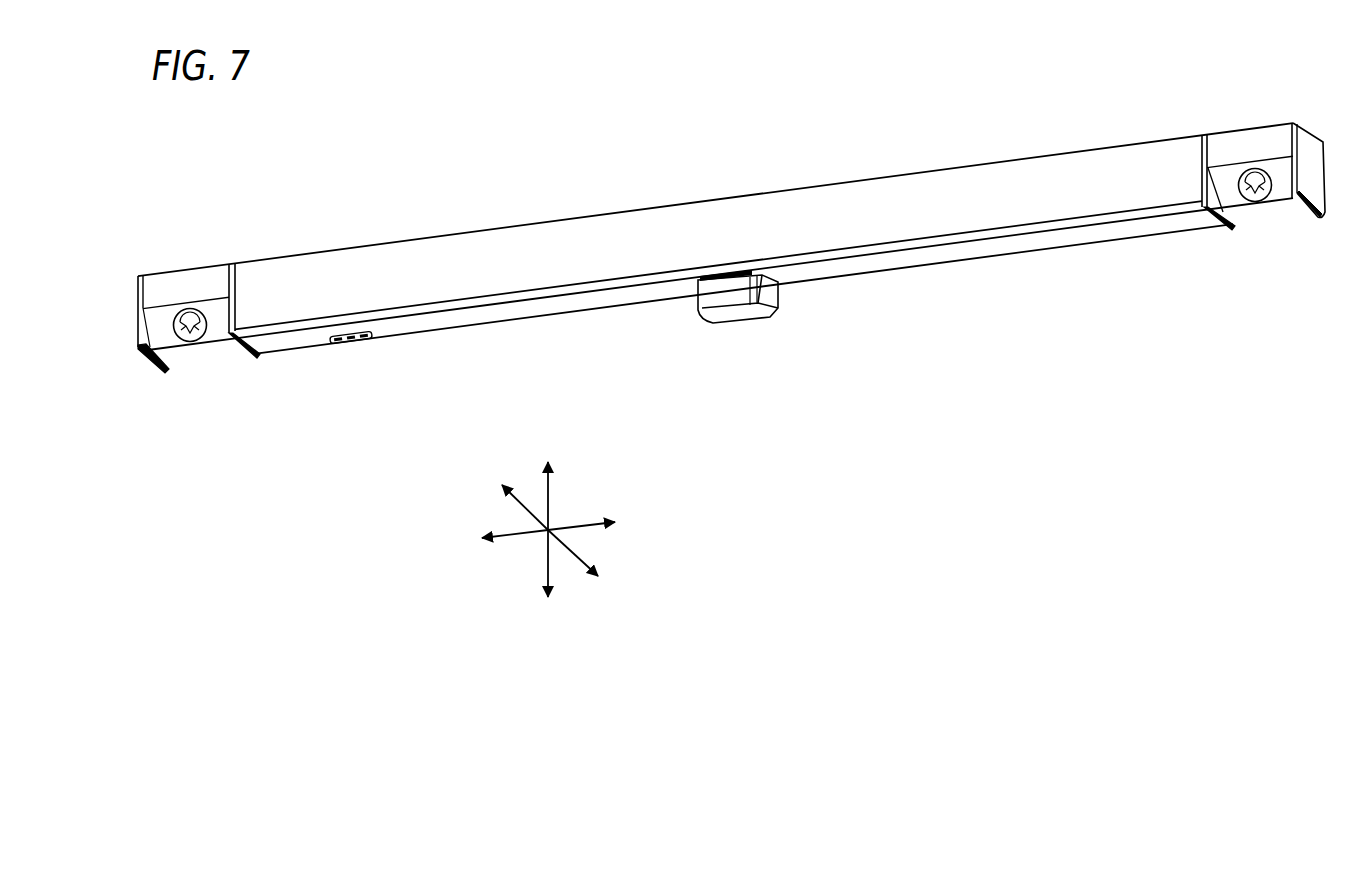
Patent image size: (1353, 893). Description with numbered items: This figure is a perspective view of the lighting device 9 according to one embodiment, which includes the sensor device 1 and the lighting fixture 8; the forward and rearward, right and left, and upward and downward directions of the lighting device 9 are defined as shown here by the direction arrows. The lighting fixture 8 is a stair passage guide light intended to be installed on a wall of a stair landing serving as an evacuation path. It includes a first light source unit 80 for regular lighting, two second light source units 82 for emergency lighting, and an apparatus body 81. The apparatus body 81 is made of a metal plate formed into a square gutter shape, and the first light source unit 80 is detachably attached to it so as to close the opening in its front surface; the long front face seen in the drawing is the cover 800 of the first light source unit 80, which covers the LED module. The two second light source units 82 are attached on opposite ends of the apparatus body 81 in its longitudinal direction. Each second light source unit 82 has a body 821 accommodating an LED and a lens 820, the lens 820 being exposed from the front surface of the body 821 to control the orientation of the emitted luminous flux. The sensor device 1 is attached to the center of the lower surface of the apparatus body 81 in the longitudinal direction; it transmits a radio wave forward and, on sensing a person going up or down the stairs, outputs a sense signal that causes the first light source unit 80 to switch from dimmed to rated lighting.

The sensor device 1 is at (760, 323).
The lighting fixture 8 is at (847, 278).
The lighting device 9 is at (835, 391).
The first light source unit 80 is at (400, 260).
The cover 800 is at (970, 188).
The apparatus body 81 is at (1122, 246).
The second light source unit 82 is at (167, 370).
The lens 820 is at (194, 342).
The body 821 is at (175, 285).